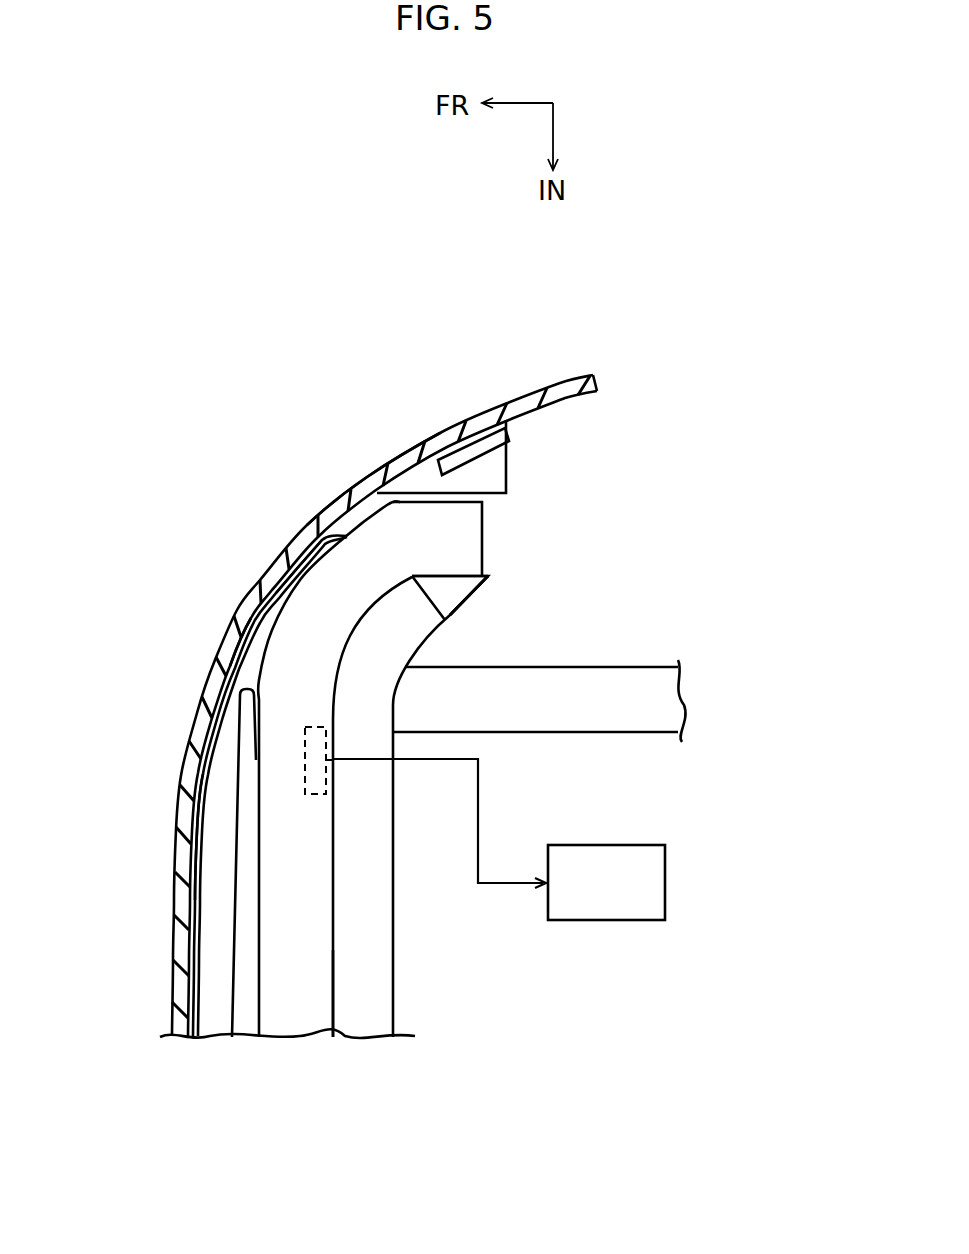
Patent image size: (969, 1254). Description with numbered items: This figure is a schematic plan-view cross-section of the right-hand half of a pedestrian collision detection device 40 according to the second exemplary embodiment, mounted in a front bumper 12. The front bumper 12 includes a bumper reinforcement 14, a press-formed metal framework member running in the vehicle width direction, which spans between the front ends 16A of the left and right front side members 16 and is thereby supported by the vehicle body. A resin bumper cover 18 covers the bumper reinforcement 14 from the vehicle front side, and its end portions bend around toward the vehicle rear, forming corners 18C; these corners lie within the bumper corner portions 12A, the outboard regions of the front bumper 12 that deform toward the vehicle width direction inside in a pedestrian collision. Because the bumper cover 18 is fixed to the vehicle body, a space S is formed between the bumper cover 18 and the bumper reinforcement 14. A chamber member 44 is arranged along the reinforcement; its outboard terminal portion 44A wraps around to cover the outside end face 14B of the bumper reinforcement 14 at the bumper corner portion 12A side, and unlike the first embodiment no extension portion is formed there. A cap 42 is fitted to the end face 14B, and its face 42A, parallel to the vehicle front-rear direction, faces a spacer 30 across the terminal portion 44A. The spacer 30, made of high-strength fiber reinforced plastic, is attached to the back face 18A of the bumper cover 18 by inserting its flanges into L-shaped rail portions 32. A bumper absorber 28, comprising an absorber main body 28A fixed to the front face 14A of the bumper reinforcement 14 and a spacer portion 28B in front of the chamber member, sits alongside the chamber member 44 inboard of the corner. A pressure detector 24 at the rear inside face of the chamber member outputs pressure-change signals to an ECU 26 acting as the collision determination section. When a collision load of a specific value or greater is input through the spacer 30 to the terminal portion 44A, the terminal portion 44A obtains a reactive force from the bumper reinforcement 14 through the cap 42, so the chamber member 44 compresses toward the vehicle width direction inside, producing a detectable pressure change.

The front bumper 12 is at (128, 950).
The bumper corner portion 12A is at (352, 437).
The bumper reinforcement 14 is at (400, 975).
The front face of the bumper reinforcement 14A is at (333, 1008).
The vehicle width direction outside end face of the bumper reinforcement 14B is at (430, 603).
The front side member 16 is at (595, 663).
The front end of the front side member 16A is at (410, 710).
The bumper cover 18 is at (172, 906).
The back face of the bumper cover 18A is at (243, 656).
The corner of the bumper cover 18C is at (370, 476).
The pressure detector 24 is at (307, 782).
The ECU 26 is at (620, 845).
The bumper absorber 28 is at (226, 668).
The absorber main body 28A is at (264, 634).
The spacer portion 28B is at (212, 850).
The spacer 30 is at (510, 455).
The rail portion 32 is at (468, 457).
The pedestrian collision detection device 40 is at (710, 800).
The cap 42 is at (482, 598).
The face of the cap 42A is at (450, 576).
The chamber member 44 is at (246, 987).
The terminal portion of the chamber member 44A is at (470, 528).
The space S is at (223, 630).